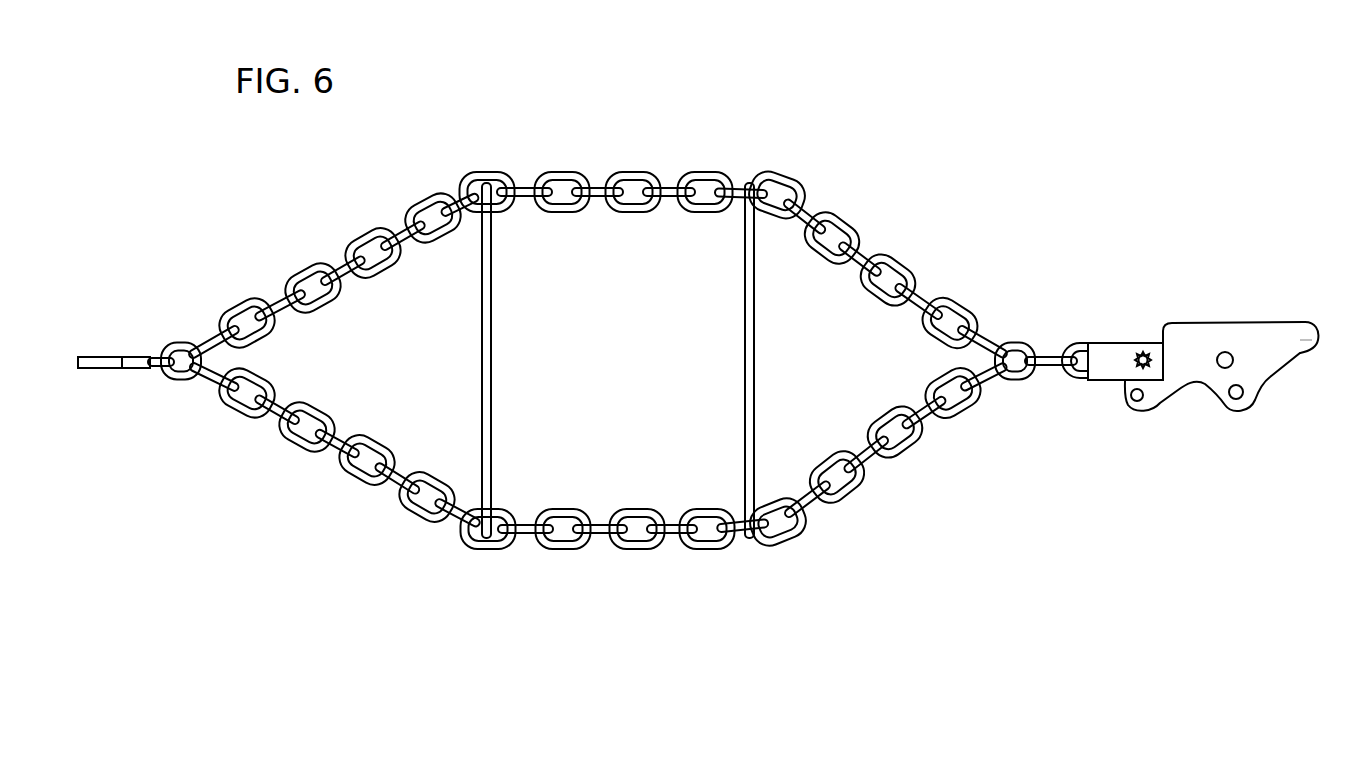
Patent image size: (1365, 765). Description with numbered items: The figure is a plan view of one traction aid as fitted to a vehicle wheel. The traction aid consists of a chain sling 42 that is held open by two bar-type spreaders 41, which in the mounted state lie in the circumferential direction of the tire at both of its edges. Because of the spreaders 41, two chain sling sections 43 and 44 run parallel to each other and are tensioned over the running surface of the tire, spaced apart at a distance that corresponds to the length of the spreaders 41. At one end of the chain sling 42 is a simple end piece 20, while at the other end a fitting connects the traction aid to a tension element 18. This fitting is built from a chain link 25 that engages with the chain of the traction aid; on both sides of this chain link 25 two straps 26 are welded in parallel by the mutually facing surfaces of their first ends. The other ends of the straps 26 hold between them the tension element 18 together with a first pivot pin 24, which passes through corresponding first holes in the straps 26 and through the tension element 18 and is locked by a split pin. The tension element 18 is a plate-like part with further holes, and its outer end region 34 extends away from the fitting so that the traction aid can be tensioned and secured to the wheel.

The hook rod 20 is at (108, 347).
The chain sling section 43 is at (559, 176).
The chain sling section 44 is at (625, 546).
The chain sling 42 is at (528, 543).
The bar-type spreader 41 is at (747, 323).
The chain link 25 is at (1073, 344).
The strap 26 is at (1108, 349).
The first pivot pin 24 is at (1148, 368).
The tension element 18 is at (1228, 317).
The plate end portion 34 is at (1298, 336).